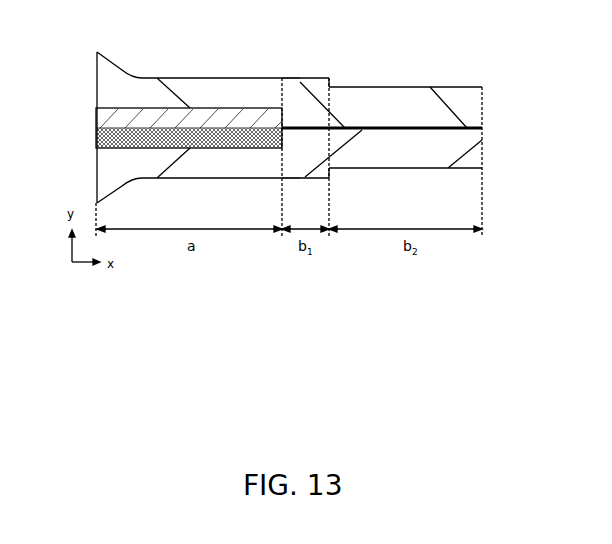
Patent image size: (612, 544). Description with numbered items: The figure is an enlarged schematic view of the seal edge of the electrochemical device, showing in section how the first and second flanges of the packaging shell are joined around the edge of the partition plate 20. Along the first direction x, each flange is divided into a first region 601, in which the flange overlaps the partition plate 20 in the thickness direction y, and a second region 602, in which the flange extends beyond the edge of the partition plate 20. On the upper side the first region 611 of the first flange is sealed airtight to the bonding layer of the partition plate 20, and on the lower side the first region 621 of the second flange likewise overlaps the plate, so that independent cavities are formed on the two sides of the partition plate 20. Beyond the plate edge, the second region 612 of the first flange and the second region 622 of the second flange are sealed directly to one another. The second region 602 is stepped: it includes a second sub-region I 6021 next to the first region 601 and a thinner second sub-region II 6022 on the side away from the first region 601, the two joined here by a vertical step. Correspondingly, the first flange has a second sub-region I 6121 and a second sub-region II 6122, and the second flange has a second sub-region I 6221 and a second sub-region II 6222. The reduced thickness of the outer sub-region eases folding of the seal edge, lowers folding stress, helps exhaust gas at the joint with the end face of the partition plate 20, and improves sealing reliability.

The partition plate 20 is at (114, 128).
The first region of the first flange 611 is at (180, 84).
The first region of the second flange 621 is at (185, 172).
The first region 601 is at (131, 347).
The second sub-region I of the first flange 6121 is at (305, 92).
The second sub-region I of the second flange 6221 is at (305, 167).
The second sub-region II of the first flange 6122 is at (419, 94).
The second sub-region II of the second flange 6222 is at (419, 162).
The second sub-region I 6021 is at (229, 311).
The second sub-region II 6022 is at (229, 369).
The second region 602 is at (280, 331).
The second region of the first flange 612 is at (409, 311).
The second region of the second flange 622 is at (409, 369).